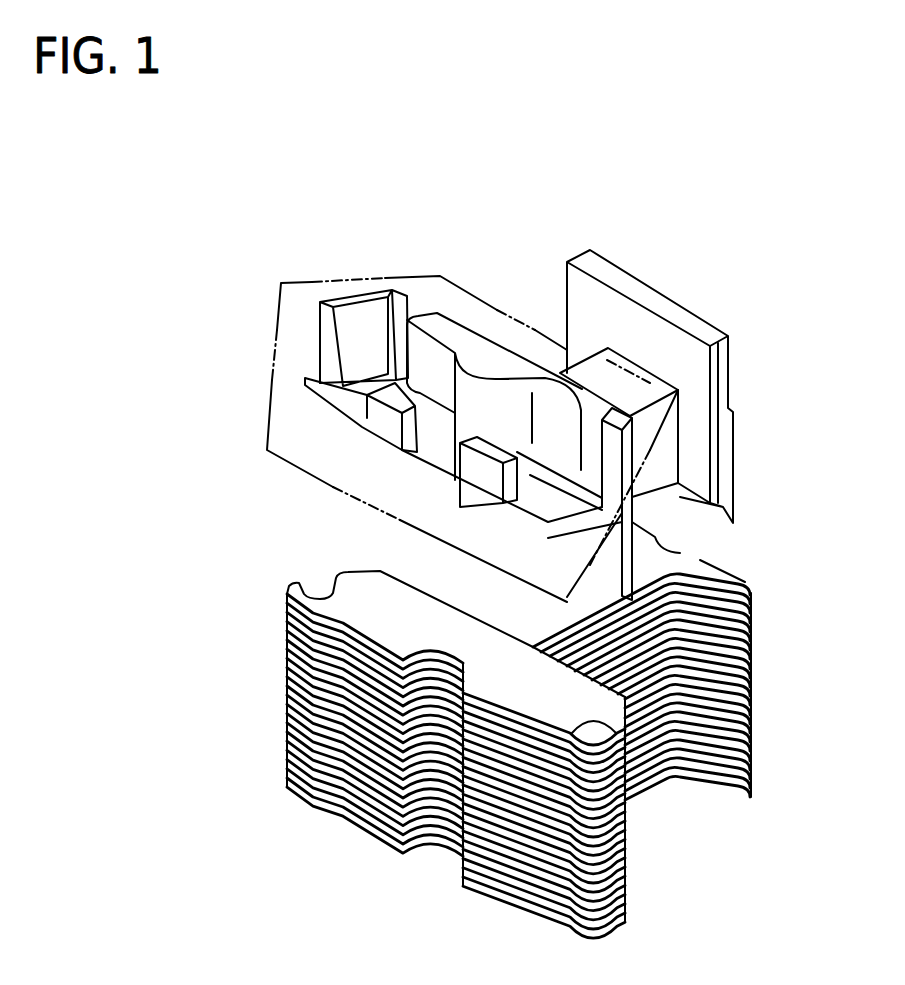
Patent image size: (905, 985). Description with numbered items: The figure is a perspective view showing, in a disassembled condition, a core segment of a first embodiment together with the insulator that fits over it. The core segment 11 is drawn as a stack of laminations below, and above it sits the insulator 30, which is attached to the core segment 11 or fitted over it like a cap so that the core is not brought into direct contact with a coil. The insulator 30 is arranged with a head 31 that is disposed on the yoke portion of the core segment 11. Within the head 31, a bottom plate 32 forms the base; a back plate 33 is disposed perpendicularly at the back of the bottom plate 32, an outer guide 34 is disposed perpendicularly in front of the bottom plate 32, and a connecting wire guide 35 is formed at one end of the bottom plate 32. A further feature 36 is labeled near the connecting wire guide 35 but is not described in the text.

The core segment 11 is at (493, 640).
The insulator 30 is at (665, 362).
The head 31 is at (408, 401).
The bottom plate 32 is at (452, 540).
The back plate 33 is at (487, 353).
The outer guide 34 is at (377, 437).
The connecting wire guide 35 is at (347, 297).
The side portion of tab 36 is at (322, 343).